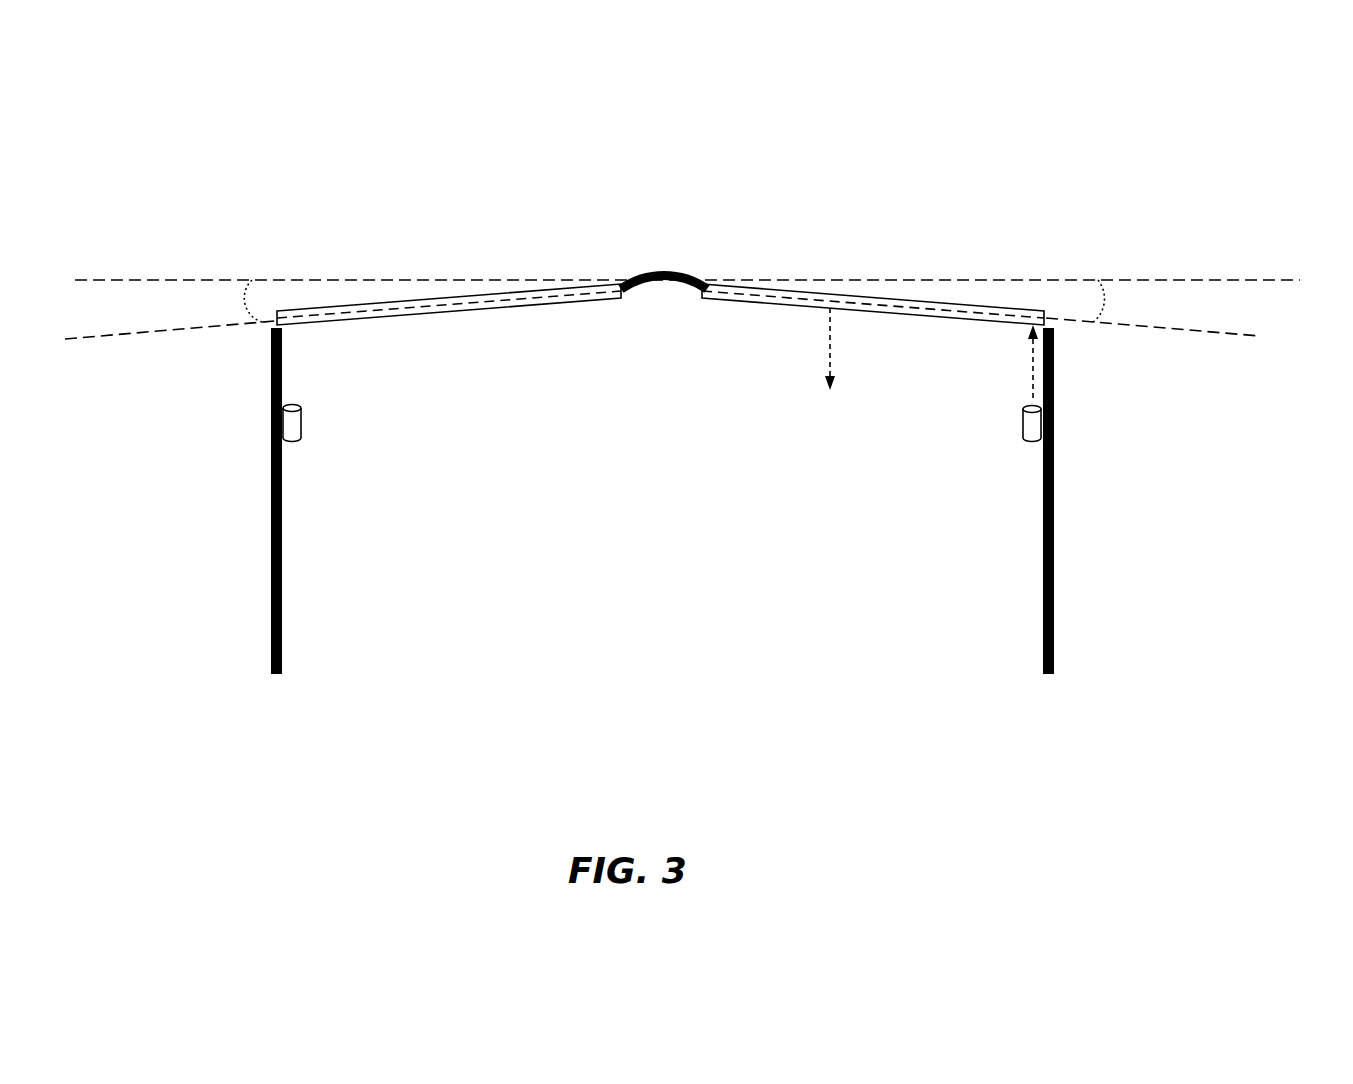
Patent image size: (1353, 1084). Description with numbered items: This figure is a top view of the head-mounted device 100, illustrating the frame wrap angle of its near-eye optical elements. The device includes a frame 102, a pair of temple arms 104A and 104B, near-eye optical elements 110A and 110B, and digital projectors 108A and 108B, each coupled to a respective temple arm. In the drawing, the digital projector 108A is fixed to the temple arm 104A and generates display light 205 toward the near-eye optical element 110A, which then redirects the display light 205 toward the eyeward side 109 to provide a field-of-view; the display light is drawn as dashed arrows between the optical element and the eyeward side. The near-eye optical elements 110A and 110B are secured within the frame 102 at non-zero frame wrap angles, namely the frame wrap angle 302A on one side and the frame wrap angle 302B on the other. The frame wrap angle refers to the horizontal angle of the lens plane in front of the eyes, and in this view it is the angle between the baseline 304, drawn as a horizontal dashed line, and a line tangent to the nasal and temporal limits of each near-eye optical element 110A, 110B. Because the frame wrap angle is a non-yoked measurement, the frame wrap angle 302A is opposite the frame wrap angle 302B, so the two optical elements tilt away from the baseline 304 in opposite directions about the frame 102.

The head-mounted device 100 is at (1274, 184).
The frame 102 is at (661, 270).
The temple arm 104A is at (1053, 488).
The temple arm 104B is at (270, 498).
The digital projector 108A is at (1025, 430).
The digital projector 108B is at (298, 427).
The eyeward side 109 is at (792, 549).
The near-eye optical element 110A is at (888, 298).
The near-eye optical element 110B is at (467, 297).
The display light 205 is at (828, 363).
The frame wrap angle 302A is at (1133, 303).
The frame wrap angle 302B is at (207, 311).
The baseline 304 is at (1127, 280).